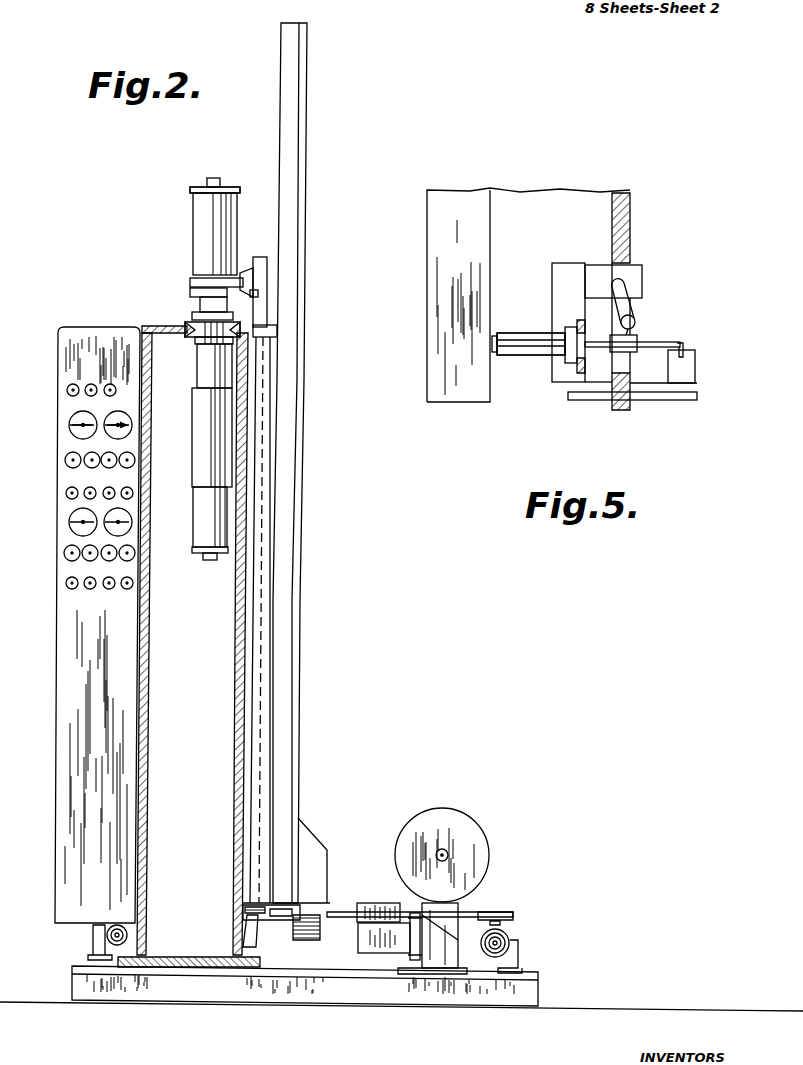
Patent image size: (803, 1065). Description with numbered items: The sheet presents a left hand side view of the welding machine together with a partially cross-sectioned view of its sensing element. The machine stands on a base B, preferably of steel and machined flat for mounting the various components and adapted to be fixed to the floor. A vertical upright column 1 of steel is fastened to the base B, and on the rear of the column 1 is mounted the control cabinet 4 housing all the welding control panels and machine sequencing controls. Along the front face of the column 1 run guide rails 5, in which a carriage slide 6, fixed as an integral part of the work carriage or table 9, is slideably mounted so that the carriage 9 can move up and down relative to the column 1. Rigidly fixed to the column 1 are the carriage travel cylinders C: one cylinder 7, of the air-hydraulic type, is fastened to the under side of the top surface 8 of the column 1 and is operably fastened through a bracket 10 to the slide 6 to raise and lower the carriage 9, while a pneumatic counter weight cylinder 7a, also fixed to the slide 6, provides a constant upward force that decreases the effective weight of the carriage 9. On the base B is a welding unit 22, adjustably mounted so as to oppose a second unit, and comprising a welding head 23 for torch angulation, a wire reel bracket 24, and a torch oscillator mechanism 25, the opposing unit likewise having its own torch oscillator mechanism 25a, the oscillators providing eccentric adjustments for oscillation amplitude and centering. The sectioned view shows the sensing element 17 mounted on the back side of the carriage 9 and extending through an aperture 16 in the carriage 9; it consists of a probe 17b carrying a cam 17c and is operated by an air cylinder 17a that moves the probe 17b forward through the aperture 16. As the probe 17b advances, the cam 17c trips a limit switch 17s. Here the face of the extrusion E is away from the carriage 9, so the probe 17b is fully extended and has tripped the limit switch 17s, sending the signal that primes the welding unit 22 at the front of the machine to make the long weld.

In FIG. 2, the vertical upright column 1 is at (158, 324).
In FIG. 2, the control cabinet 4 is at (105, 338).
In FIG. 2, the guide rails 5 is at (278, 368).
In FIG. 2, the carriage slide 6 is at (262, 262).
In FIG. 2, the cylinder 7 is at (203, 526).
In FIG. 2, the pneumatic counter weight cylinder 7a is at (203, 197).
In FIG. 2, the top surface 8 is at (201, 346).
In FIG. 2, the work carriage 9 is at (303, 123).
In FIG. 5, the work carriage 9 is at (620, 410).
In FIG. 2, the bracket 10 is at (200, 292).
In FIG. 2, the carriage travel cylinders C is at (188, 231).
In FIG. 2, the base B is at (520, 994).
In FIG. 2, the welding unit 22 is at (437, 805).
In FIG. 2, the welding head 23 is at (375, 905).
In FIG. 2, the wire reel bracket 24 is at (482, 848).
In FIG. 2, the torch oscillator mechanism 25 is at (506, 938).
In FIG. 2, the torch oscillator mechanism 25a is at (103, 936).
In FIG. 5, the aperture 16 is at (625, 262).
In FIG. 5, the sensing element 17 is at (536, 324).
In FIG. 5, the air cylinder 17a is at (518, 357).
In FIG. 5, the probe 17b is at (662, 336).
In FIG. 5, the cam 17c is at (622, 352).
In FIG. 5, the limit switch 17s is at (634, 320).
In FIG. 5, the extrusion E is at (696, 368).